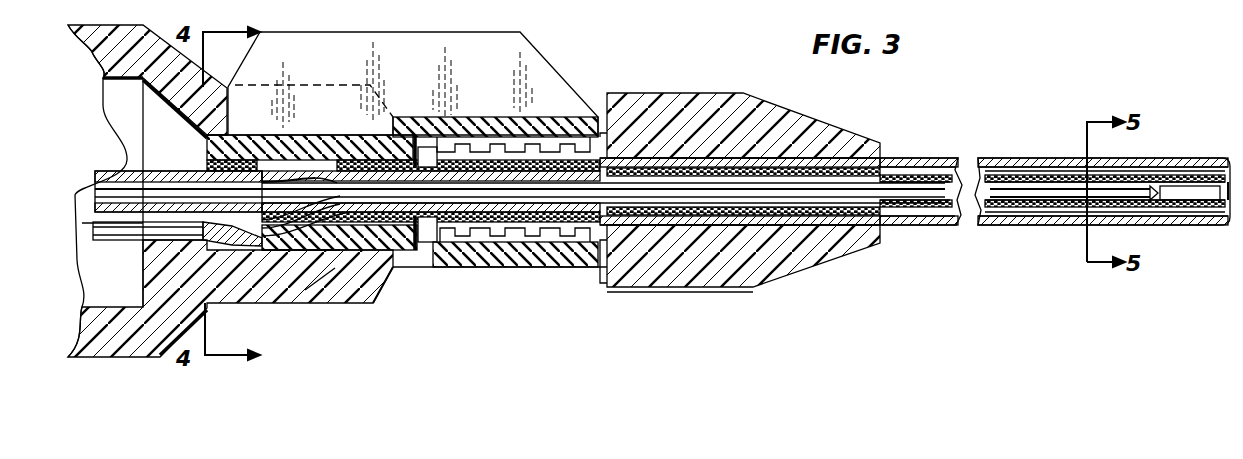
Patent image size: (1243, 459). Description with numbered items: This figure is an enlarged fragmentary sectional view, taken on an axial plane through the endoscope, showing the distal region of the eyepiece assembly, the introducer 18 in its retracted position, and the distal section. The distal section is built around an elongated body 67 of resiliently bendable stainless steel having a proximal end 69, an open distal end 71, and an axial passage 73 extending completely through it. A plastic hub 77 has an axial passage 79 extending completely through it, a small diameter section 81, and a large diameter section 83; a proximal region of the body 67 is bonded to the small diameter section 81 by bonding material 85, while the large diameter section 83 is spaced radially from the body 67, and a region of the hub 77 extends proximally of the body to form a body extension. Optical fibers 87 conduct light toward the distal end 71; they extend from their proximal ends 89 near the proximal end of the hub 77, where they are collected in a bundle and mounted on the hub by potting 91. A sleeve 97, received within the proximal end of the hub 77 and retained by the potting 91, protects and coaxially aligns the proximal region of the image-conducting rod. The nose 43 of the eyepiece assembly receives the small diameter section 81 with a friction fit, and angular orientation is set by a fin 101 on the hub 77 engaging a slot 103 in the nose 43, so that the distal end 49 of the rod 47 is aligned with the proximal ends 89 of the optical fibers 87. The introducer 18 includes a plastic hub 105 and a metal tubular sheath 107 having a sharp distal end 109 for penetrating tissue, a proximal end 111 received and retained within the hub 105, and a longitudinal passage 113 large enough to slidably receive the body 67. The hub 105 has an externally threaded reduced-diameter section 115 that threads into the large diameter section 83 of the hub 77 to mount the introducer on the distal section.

The introducer 18 is at (720, 88).
The nose 43 is at (283, 287).
The rod 47 is at (167, 214).
The distal end of the rod 49 is at (170, 242).
The elongated body 67 is at (1067, 173).
The proximal end of the body 69 is at (320, 290).
The open distal end 71 is at (1230, 195).
The axial passage 73 is at (797, 193).
The hub 77 is at (438, 272).
The axial passage of the hub 79 is at (300, 253).
The small diameter section 81 is at (374, 293).
The large diameter section 83 is at (533, 257).
The bonding material 85 is at (404, 245).
The optical fibers 87 is at (303, 185).
The proximal ends of the optical fibers 89 is at (207, 244).
The potting 91 is at (208, 165).
The sleeve 97 is at (128, 163).
The fin 101 is at (487, 47).
The slot 103 is at (240, 97).
The hub of the introducer 105 is at (773, 127).
The tubular sheath 107 is at (910, 158).
The sharp distal end 109 is at (1200, 160).
The proximal end of the sheath 111 is at (643, 160).
The longitudinal passage 113 is at (1127, 167).
The externally threaded reduced-diameter section 115 is at (537, 127).